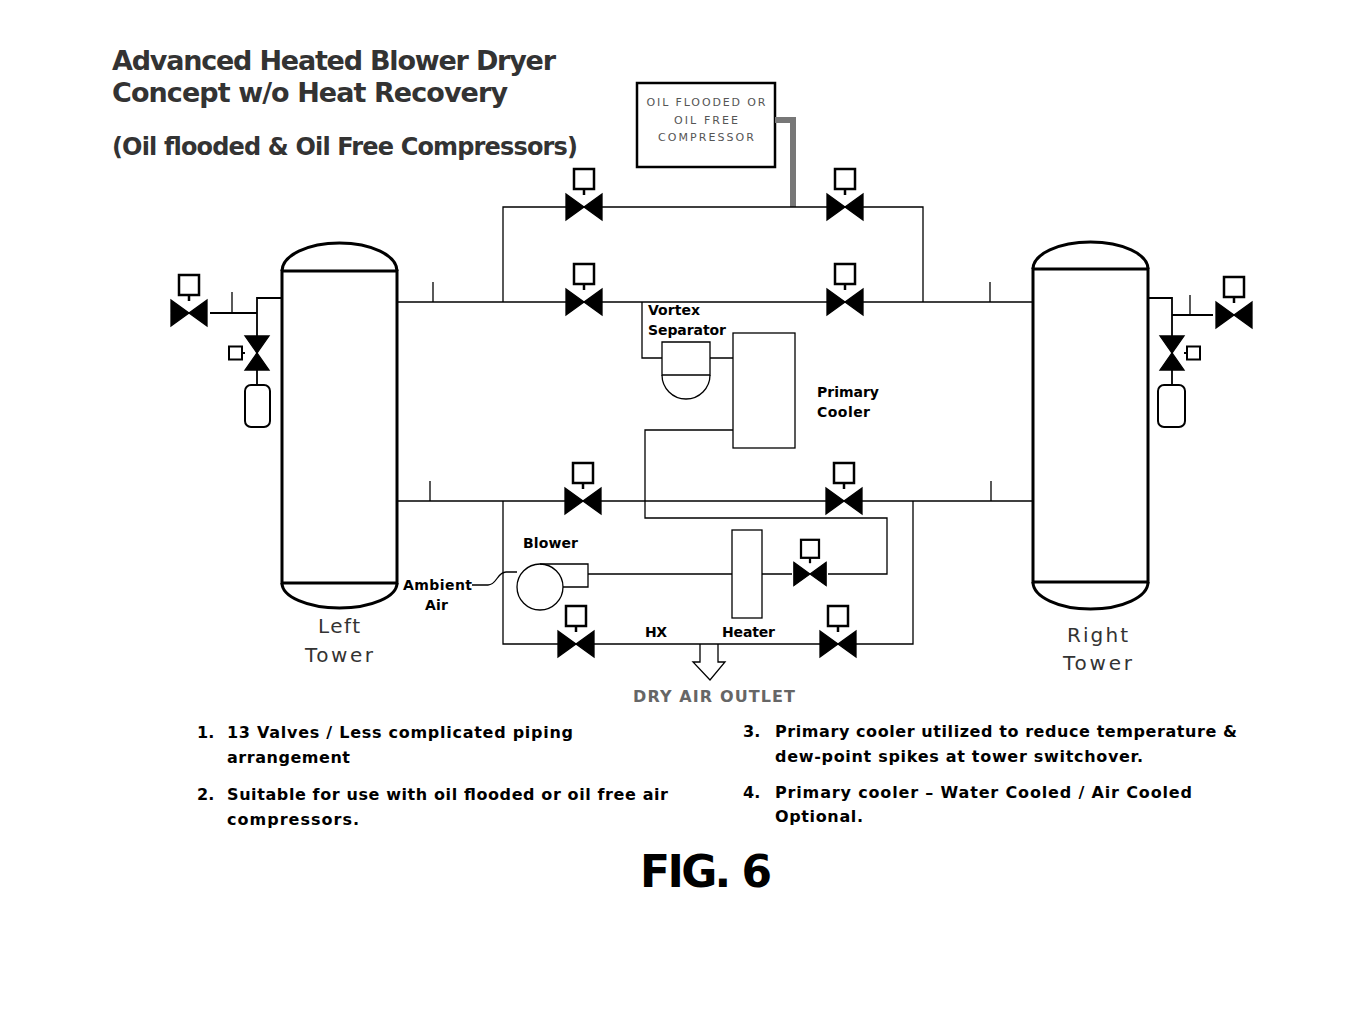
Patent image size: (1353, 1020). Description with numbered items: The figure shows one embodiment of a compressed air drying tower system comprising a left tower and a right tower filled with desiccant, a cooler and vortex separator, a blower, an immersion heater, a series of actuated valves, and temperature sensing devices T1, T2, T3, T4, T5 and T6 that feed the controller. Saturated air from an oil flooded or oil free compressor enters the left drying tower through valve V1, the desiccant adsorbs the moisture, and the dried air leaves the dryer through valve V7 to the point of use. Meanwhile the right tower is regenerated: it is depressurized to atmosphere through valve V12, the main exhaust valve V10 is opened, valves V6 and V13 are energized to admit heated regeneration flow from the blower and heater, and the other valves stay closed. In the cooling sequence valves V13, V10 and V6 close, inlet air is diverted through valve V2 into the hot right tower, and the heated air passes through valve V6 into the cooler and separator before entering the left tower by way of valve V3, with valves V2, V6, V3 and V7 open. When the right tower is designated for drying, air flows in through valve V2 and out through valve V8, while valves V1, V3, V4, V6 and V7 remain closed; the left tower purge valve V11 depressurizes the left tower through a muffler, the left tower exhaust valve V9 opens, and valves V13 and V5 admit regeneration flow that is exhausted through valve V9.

The valve V1 is at (584, 182).
The valve V2 is at (845, 182).
The valve V3 is at (584, 274).
The valve V4 is at (845, 274).
The valve V5 is at (583, 471).
The valve V6 is at (844, 471).
The valve V7 is at (576, 641).
The valve V8 is at (838, 641).
The left tower exhaust valve V9 is at (189, 279).
The main exhaust valve V10 is at (1256, 290).
The left tower purge valve V11 is at (225, 353).
The valve V12 is at (1198, 353).
The valve V13 is at (829, 562).
The temperature sensing device T1 is at (432, 280).
The temperature sensing device T2 is at (988, 280).
The temperature sensing device T3 is at (428, 480).
The temperature sensing device T4 is at (990, 477).
The temperature sensing device T5 is at (230, 289).
The temperature sensing device T6 is at (1188, 293).